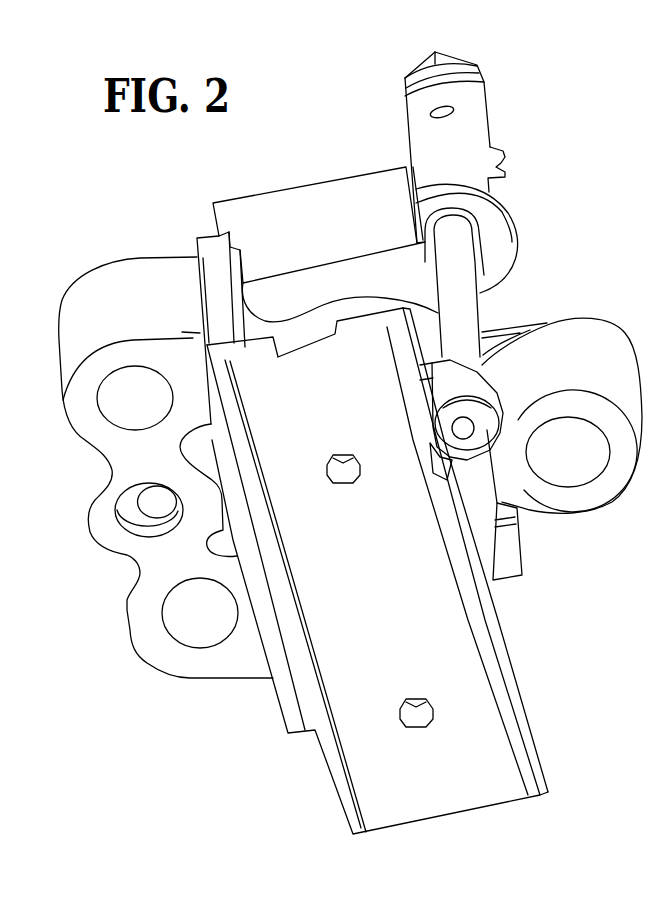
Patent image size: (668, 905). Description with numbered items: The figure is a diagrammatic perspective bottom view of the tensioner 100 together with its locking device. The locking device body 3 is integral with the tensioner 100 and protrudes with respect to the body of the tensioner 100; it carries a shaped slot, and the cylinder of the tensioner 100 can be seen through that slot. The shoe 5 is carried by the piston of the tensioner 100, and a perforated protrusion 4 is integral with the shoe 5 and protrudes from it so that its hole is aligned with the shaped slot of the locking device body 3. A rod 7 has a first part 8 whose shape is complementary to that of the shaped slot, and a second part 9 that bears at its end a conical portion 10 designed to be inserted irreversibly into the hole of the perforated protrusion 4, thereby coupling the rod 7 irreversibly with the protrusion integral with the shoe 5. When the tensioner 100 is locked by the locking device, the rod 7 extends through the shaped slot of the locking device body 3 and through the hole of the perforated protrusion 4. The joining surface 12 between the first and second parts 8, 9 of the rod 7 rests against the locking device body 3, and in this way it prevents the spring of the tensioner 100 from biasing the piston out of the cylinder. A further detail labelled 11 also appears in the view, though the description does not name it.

The locking device body 3 is at (500, 253).
The perforated protrusion 4 is at (483, 393).
The shoe 5 is at (373, 610).
The rod 7 is at (490, 316).
The first part 8 is at (431, 135).
The second part 9 is at (442, 287).
The conical portion 10 is at (468, 432).
The latch projection 11 is at (495, 157).
The joining surface 12 is at (482, 240).
The tensioner 100 is at (582, 658).